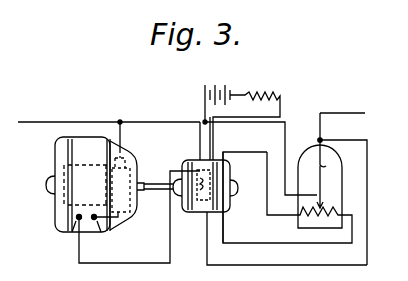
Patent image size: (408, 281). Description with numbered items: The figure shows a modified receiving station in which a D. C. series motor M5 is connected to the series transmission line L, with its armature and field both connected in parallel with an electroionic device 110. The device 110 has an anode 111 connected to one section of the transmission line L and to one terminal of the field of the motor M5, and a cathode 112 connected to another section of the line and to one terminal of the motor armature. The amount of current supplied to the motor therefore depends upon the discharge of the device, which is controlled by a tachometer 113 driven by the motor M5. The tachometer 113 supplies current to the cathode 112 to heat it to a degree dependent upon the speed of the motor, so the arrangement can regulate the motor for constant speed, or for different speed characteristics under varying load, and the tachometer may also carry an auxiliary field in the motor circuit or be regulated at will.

The transmission line L is at (62, 98).
The D. C. series motor M5 is at (92, 142).
The electroionic device 110 is at (318, 140).
The anode 111 is at (328, 182).
The cathode 112 is at (302, 217).
The tachometer 113 is at (188, 210).